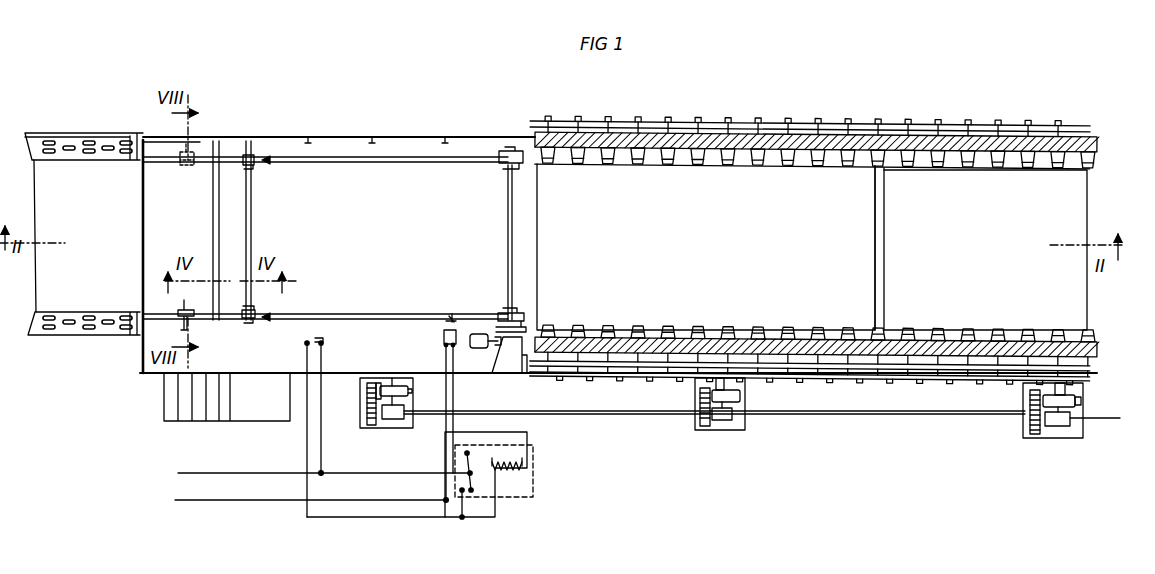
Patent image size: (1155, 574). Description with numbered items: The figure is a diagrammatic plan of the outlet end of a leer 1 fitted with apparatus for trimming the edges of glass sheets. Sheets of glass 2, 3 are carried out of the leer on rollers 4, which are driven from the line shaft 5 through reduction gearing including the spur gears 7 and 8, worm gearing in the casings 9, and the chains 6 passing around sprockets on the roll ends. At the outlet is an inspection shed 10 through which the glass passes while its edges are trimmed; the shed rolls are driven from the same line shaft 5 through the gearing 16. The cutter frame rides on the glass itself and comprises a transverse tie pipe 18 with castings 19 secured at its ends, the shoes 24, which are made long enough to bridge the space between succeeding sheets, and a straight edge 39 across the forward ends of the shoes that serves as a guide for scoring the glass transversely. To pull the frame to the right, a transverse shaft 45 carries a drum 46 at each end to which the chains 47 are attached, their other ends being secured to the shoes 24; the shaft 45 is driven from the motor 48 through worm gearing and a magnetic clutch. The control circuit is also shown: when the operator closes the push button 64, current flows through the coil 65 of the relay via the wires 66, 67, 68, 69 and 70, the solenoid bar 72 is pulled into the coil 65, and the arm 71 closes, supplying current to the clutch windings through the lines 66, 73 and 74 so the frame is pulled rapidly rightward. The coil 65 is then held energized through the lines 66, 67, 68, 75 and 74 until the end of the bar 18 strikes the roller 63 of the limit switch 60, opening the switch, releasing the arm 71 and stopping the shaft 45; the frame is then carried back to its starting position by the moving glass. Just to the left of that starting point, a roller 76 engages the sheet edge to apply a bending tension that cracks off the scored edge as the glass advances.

The outlet end of a leer 1 is at (880, 160).
The sheet of glass 2 is at (1032, 200).
The sheet of glass 3 is at (757, 185).
The rollers 4 is at (836, 148).
The line shaft 5 is at (810, 420).
The chains 6 is at (950, 378).
The spur gear 7 is at (1040, 428).
The spur gear 8 is at (1030, 394).
The casings 9 is at (1078, 400).
The inspection shed 10 is at (273, 137).
The gearing 16 is at (365, 400).
The pipe 18 is at (252, 208).
The castings 19 is at (256, 165).
The shoes 24 is at (278, 318).
The straight edge 39 is at (213, 226).
The transverse shaft 45 is at (508, 238).
The drum 46 is at (505, 170).
The chains 47 is at (335, 163).
The motor 48 is at (478, 334).
The limit switch 60 is at (444, 345).
The roller 63 is at (450, 322).
The push button 64 is at (312, 340).
The coil 65 is at (522, 470).
The wire 66 is at (245, 501).
The wire 67 is at (455, 457).
The wire 68 is at (527, 437).
The wire 69 is at (370, 518).
The wire 70 is at (323, 470).
The arm 71 is at (474, 478).
The solenoid bar 72 is at (520, 463).
The line 73 is at (488, 412).
The line 74 is at (232, 473).
The line 75 is at (460, 505).
The roller 76 is at (182, 152).